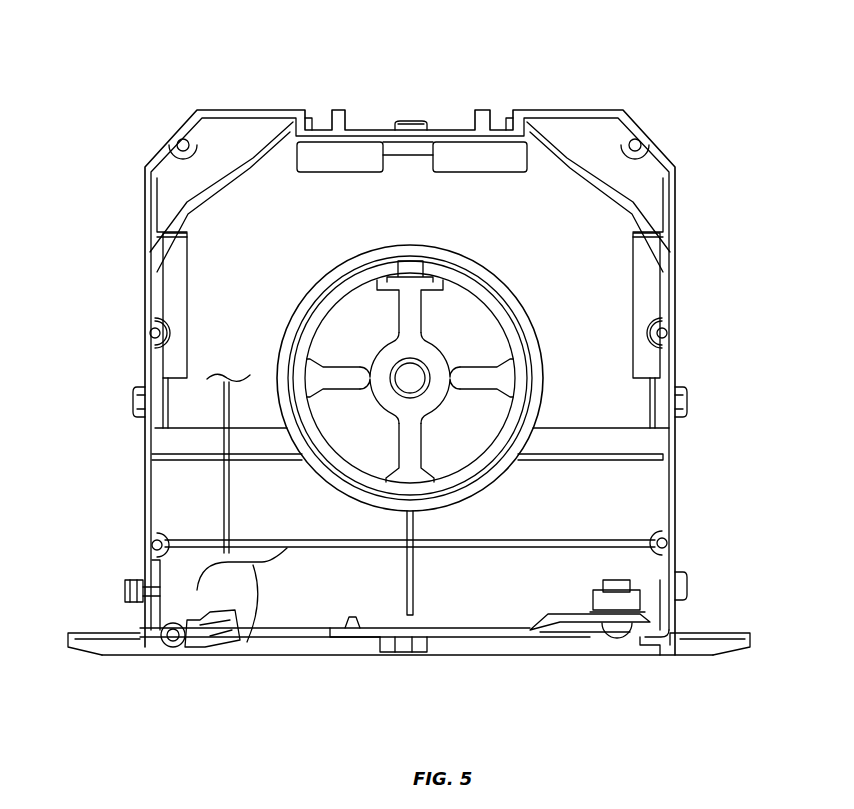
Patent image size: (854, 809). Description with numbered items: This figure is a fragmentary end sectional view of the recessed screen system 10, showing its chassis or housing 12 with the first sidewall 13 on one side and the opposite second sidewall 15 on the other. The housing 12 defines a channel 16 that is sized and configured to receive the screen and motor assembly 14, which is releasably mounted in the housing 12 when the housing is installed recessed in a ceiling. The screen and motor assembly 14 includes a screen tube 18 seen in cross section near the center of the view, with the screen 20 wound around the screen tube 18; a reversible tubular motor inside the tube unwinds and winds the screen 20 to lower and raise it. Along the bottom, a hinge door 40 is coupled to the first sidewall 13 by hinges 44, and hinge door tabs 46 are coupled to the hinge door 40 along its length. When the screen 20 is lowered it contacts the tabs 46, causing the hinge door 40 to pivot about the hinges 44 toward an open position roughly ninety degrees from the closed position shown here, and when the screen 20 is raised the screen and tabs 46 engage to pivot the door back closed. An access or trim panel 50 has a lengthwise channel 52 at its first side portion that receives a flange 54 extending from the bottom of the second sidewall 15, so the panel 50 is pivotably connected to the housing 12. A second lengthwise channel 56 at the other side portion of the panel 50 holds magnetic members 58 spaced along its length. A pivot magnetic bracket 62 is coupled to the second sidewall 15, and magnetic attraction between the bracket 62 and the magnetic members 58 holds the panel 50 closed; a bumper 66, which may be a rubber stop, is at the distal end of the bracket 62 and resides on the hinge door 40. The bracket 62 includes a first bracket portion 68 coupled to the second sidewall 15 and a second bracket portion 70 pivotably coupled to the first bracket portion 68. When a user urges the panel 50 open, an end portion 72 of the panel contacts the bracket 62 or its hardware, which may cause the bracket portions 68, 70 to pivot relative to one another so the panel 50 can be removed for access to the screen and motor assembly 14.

The recessed screen system 10 is at (606, 62).
The housing 12 is at (648, 111).
The first sidewall 13 is at (140, 362).
The screen and motor assembly 14 is at (504, 267).
The second sidewall 15 is at (679, 355).
The channel 16 is at (571, 300).
The screen tube 18 is at (538, 434).
The screen 20 is at (224, 486).
The hinge door 40 is at (272, 657).
The hinge 44 is at (161, 642).
The hinge door tab 46 is at (240, 642).
The access panel 50 is at (558, 656).
The lengthwise channel 52 is at (645, 648).
The flange 54 is at (661, 648).
The second lengthwise channel 56 is at (415, 657).
The magnetic member 58 is at (390, 657).
The pivot magnetic bracket 62 is at (577, 621).
The bumper 66 is at (347, 656).
The first bracket portion 68 is at (669, 607).
The second bracket portion 70 is at (641, 606).
The end portion 72 is at (665, 630).